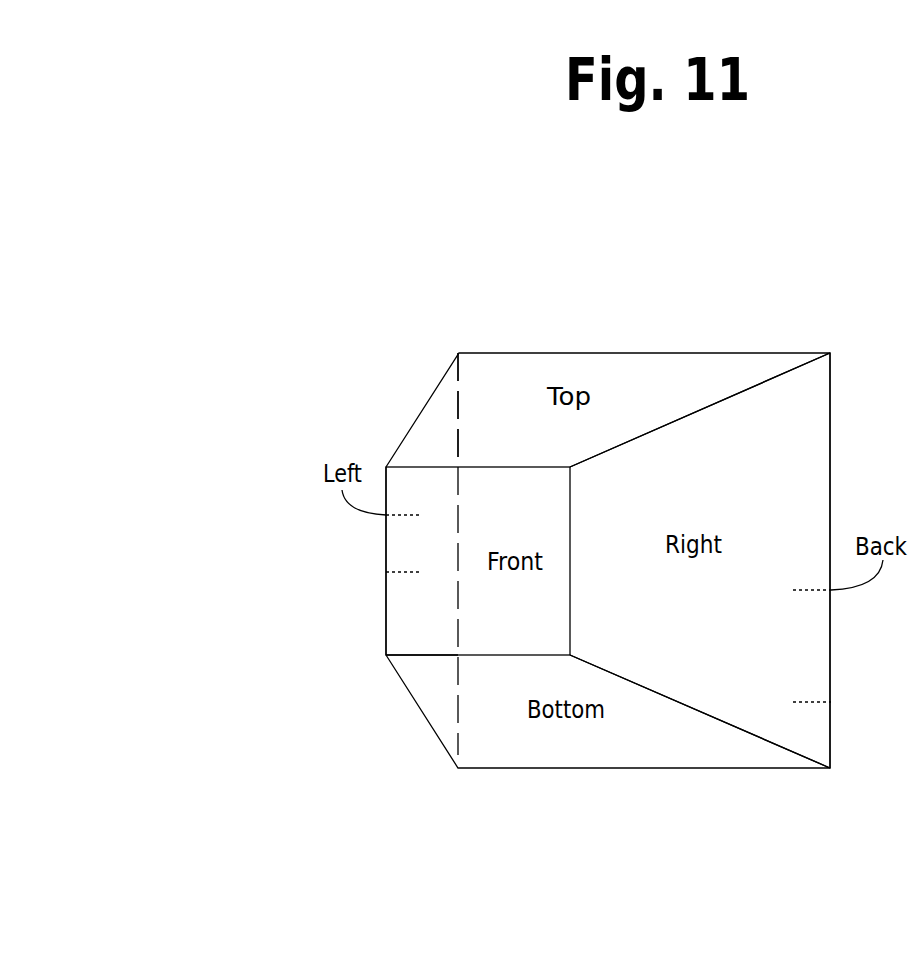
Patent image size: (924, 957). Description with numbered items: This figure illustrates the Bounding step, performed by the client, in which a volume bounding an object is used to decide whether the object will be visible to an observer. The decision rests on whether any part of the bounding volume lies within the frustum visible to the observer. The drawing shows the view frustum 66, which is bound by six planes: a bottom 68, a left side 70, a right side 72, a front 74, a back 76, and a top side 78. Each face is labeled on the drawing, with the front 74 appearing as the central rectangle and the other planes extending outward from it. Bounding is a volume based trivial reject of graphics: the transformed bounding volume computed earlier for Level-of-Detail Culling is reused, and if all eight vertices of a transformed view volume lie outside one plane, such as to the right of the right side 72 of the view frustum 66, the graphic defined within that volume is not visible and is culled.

The view frustum 66 is at (550, 372).
The bottom 68 is at (532, 748).
The left side 70 is at (386, 572).
The right side 72 is at (793, 428).
The front 74 is at (403, 637).
The back 76 is at (831, 702).
The top side 78 is at (477, 430).